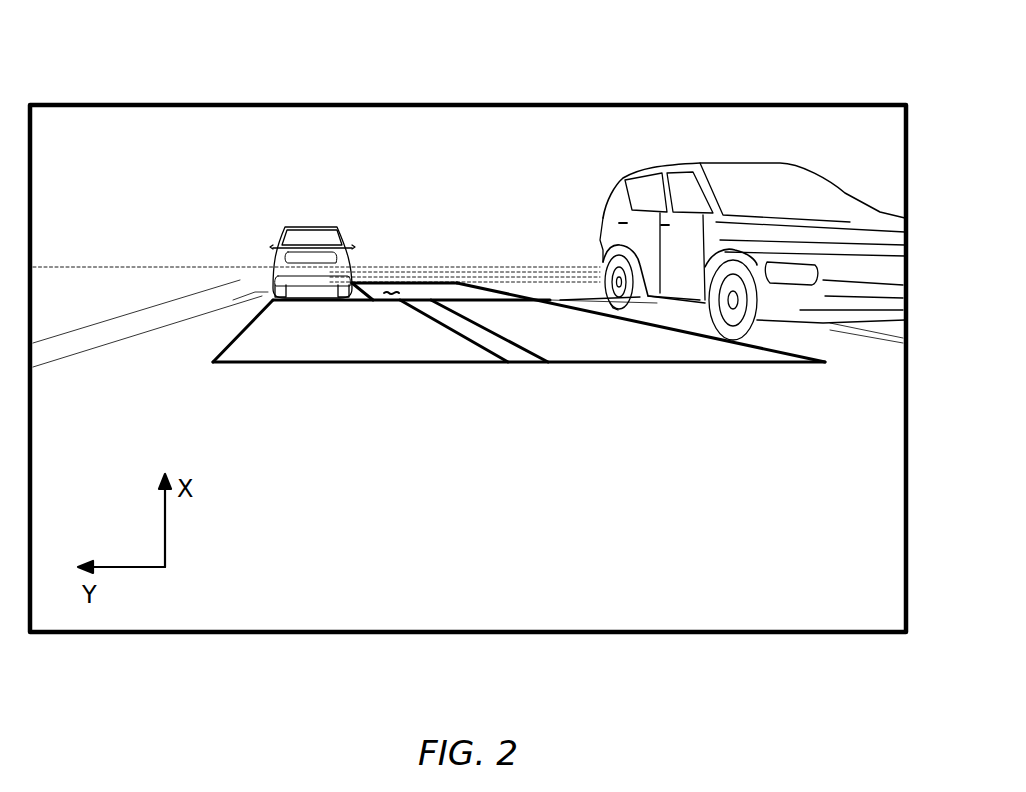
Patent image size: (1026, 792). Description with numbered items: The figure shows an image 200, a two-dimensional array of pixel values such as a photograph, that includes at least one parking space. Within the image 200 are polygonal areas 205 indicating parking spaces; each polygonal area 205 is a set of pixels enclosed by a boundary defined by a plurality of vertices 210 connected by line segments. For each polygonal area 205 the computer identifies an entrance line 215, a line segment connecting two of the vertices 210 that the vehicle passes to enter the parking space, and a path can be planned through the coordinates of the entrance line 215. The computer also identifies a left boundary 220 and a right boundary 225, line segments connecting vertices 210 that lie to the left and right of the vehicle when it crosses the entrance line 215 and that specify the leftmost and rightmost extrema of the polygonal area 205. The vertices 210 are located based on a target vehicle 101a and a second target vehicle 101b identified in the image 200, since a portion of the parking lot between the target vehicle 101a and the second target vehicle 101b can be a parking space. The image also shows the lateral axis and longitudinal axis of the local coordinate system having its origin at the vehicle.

The image 200 is at (770, 103).
The target vehicle 101a is at (283, 233).
The second target vehicle 101b is at (717, 167).
The polygonal area 205 is at (362, 347).
The vertices 210 is at (268, 298).
The entrance line 215 is at (277, 364).
The left boundary 220 is at (241, 330).
The right boundary 225 is at (382, 292).